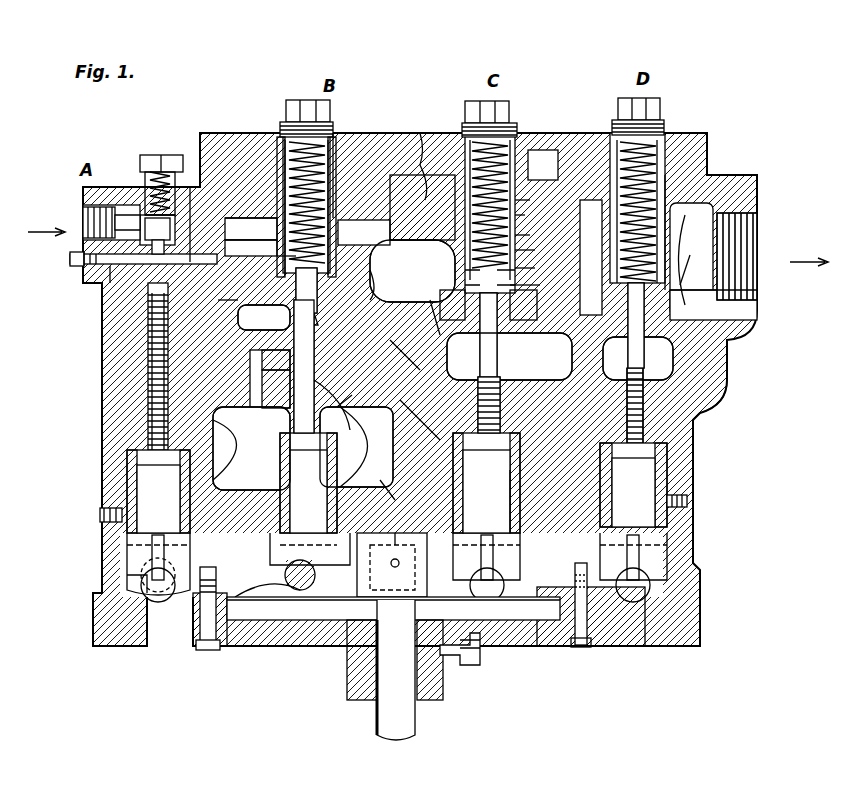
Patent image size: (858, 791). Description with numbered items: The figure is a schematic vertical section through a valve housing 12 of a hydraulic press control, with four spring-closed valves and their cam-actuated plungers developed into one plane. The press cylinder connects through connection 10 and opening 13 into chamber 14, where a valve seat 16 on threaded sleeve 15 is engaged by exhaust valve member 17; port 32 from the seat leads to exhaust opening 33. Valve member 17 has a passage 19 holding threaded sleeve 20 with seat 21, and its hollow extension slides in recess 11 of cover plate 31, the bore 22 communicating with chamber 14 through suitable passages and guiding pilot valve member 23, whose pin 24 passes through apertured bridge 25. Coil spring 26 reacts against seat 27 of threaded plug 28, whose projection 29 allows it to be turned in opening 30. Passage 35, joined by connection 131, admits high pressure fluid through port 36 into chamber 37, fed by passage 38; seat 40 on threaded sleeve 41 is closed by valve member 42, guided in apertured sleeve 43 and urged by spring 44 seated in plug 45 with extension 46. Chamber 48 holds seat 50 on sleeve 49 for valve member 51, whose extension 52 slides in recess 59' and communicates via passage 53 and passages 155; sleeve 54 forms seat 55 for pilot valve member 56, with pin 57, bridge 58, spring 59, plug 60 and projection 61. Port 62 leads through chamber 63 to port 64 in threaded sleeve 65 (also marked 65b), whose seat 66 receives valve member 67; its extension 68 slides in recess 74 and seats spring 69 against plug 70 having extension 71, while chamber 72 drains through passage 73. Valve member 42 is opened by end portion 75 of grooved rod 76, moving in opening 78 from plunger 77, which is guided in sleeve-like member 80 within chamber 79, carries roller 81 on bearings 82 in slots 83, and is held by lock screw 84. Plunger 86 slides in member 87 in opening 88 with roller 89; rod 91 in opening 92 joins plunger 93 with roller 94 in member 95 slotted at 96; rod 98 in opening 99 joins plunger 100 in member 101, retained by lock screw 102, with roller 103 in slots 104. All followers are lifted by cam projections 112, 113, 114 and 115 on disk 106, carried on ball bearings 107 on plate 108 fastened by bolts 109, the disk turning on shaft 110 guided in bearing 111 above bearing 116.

The connection 10 is at (280, 255).
The recess 11 is at (262, 228).
The valve housing 12 is at (710, 400).
The opening 13 is at (440, 335).
The chamber 14 is at (420, 305).
The threaded sleeve 15 is at (258, 385).
The valve seat 16 is at (255, 325).
The valve member 17 is at (365, 310).
The passage 19 is at (265, 312).
The threaded sleeve 20 is at (318, 315).
The valve seat 21 is at (322, 290).
The hollow bore 22 is at (340, 232).
The pilot valve member 23 is at (290, 270).
The pin 24 is at (314, 372).
The apertured bridge 25 is at (272, 366).
The coil spring 26 is at (332, 175).
The seat 27 is at (332, 140).
The threaded plug 28 is at (285, 125).
The projection 29 is at (297, 100).
The opening 30 is at (278, 140).
The cover plate 31 is at (372, 150).
The port 32 is at (360, 392).
The exhaust opening 33 is at (314, 402).
The passage 35 is at (108, 280).
The port 36 is at (105, 258).
The chamber 37 is at (130, 218).
The passage 38 is at (86, 220).
The valve seat 40 is at (172, 228).
The threaded sleeve 41 is at (165, 260).
The high pressure admission valve member 42 is at (190, 205).
The apertured sleeve 43 is at (148, 212).
The coil spring 44 is at (172, 175).
The plug 45 is at (158, 158).
The exterior extension 46 is at (165, 180).
The chamber 48 is at (535, 255).
The threaded sleeve 49 is at (537, 305).
The valve seat 50 is at (535, 286).
The valve member 51 is at (470, 290).
The sleeve-like extension 52 is at (540, 170).
The passage 53 is at (440, 362).
The sleeve 54 is at (530, 240).
The valve seat 55 is at (473, 273).
The pilot valve member 56 is at (530, 210).
The pin 57 is at (497, 330).
The bridge 58 is at (535, 270).
The coil spring 59 is at (511, 190).
The recess 59' is at (427, 207).
The threaded plug 60 is at (505, 135).
The projection 61 is at (495, 108).
The port 62 is at (520, 345).
The chamber 63 is at (610, 342).
The port 64 is at (690, 310).
The threaded sleeve 65 is at (250, 445).
The passage 65b is at (685, 275).
The valve seat 66 is at (684, 250).
The valve member 67 is at (612, 293).
The sleeve-like extension 68 is at (690, 200).
The coil spring 69 is at (655, 175).
The threaded plug 70 is at (660, 125).
The extension 71 is at (645, 102).
The chamber 72 is at (735, 188).
The passage 73 is at (722, 245).
The recess 74 is at (525, 218).
The end portion 75 is at (103, 305).
The rod 76 is at (148, 370).
The plunger 77 is at (150, 480).
The opening 78 is at (148, 410).
The chamber 79 is at (135, 460).
The sleeve-like member 80 is at (130, 545).
The roller 81 is at (160, 598).
The bearings 82 is at (130, 588).
The slots 83 is at (150, 560).
The lock screw 84 is at (102, 518).
The plunger 86 is at (330, 455).
The sleeve-like member 87 is at (272, 545).
The opening 88 is at (280, 518).
The roller 89 is at (302, 562).
The rod 91 is at (420, 425).
The opening 92 is at (500, 400).
The plunger 93 is at (500, 485).
The roller 94 is at (490, 600).
The sleeve-like member 95 is at (515, 500).
The slots 96 is at (500, 550).
The rod 98 is at (643, 415).
The opening 99 is at (643, 390).
The plunger 100 is at (640, 480).
The sleeve-like member 101 is at (660, 528).
The lock screw 102 is at (688, 500).
The roller 103 is at (630, 600).
The slots 104 is at (645, 552).
The disk 106 is at (335, 610).
The ball bearings 107 is at (578, 620).
The plate 108 is at (238, 630).
The bolts 109 is at (207, 648).
The shaft 110 is at (385, 712).
The bearing 111 is at (395, 500).
The cam projection 112 is at (380, 580).
The cam projection 113 is at (275, 580).
The cam projection 114 is at (395, 530).
The cam projection 115 is at (495, 578).
The bearing 116 is at (360, 680).
The connection 131 is at (82, 262).
The passages 155 is at (440, 135).